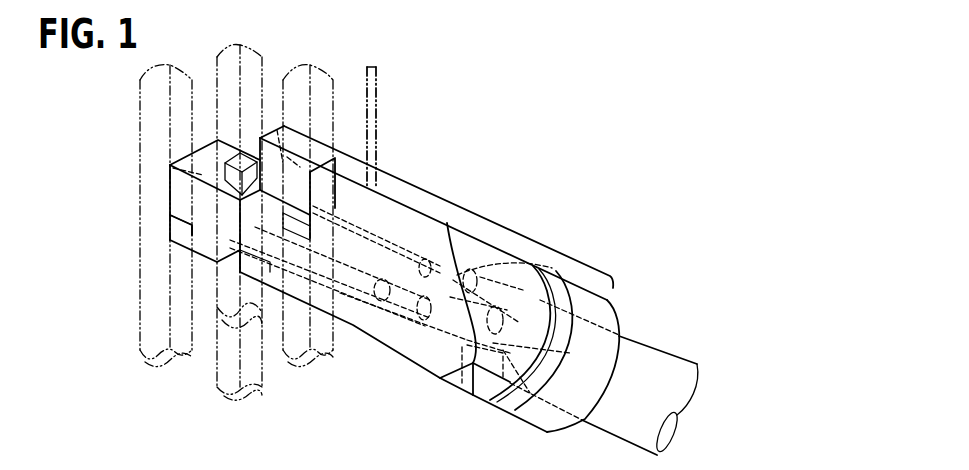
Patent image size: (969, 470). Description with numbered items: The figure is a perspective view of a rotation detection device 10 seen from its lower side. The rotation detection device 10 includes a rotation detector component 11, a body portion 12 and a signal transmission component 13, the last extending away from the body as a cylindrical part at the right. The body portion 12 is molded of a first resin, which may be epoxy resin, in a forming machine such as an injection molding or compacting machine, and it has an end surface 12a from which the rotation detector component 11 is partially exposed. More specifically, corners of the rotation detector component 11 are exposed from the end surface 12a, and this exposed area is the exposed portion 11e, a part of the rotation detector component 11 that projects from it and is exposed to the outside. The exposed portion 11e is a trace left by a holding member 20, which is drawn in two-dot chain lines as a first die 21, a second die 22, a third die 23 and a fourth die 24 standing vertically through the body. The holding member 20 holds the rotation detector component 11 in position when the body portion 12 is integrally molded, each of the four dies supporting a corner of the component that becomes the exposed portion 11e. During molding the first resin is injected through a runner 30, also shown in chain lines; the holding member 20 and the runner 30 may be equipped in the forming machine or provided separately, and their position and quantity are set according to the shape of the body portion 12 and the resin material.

The rotation detection device 10 is at (547, 197).
The rotation detector component 11 is at (272, 150).
The exposed portion 11e is at (223, 164).
The body portion 12 is at (432, 187).
The end surface 12a is at (243, 237).
The signal transmission component 13 is at (649, 372).
The holding member 20 is at (204, 223).
The first die 21 is at (152, 257).
The second die 22 is at (230, 293).
The third die 23 is at (230, 347).
The fourth die 24 is at (297, 325).
The runner 30 is at (377, 100).